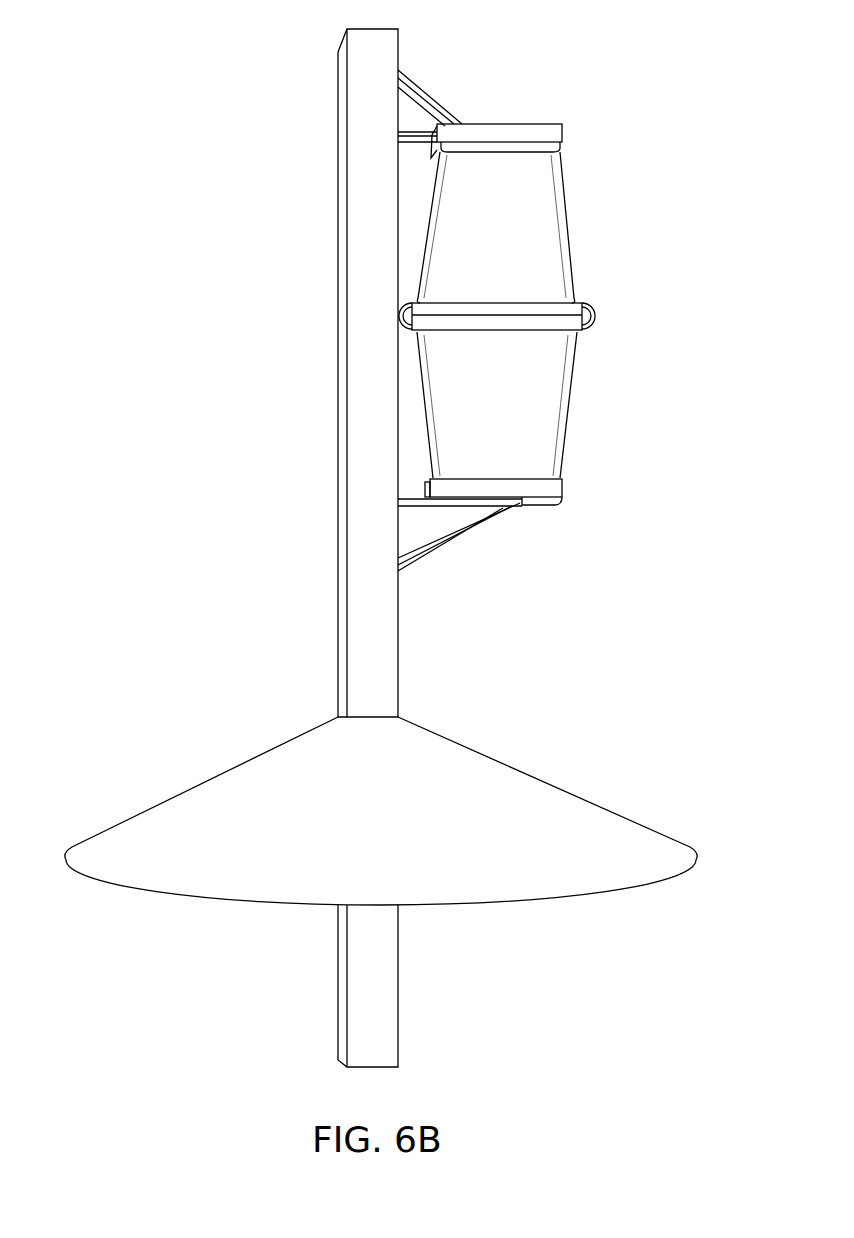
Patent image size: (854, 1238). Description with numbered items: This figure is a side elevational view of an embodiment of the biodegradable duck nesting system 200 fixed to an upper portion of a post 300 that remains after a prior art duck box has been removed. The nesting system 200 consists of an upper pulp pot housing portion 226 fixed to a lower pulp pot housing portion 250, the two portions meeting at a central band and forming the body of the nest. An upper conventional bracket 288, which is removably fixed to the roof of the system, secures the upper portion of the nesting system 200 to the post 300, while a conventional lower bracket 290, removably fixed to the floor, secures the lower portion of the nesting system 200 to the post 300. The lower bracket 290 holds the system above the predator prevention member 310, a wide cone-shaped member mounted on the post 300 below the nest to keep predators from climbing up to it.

The biodegradable duck nesting system 200 is at (564, 321).
The upper pulp pot housing portion 226 is at (515, 240).
The lower pulp pot housing portion 250 is at (514, 409).
The upper bracket 288 is at (442, 97).
The lower bracket 290 is at (460, 562).
The post 300 is at (347, 372).
The predator prevention member 310 is at (404, 816).